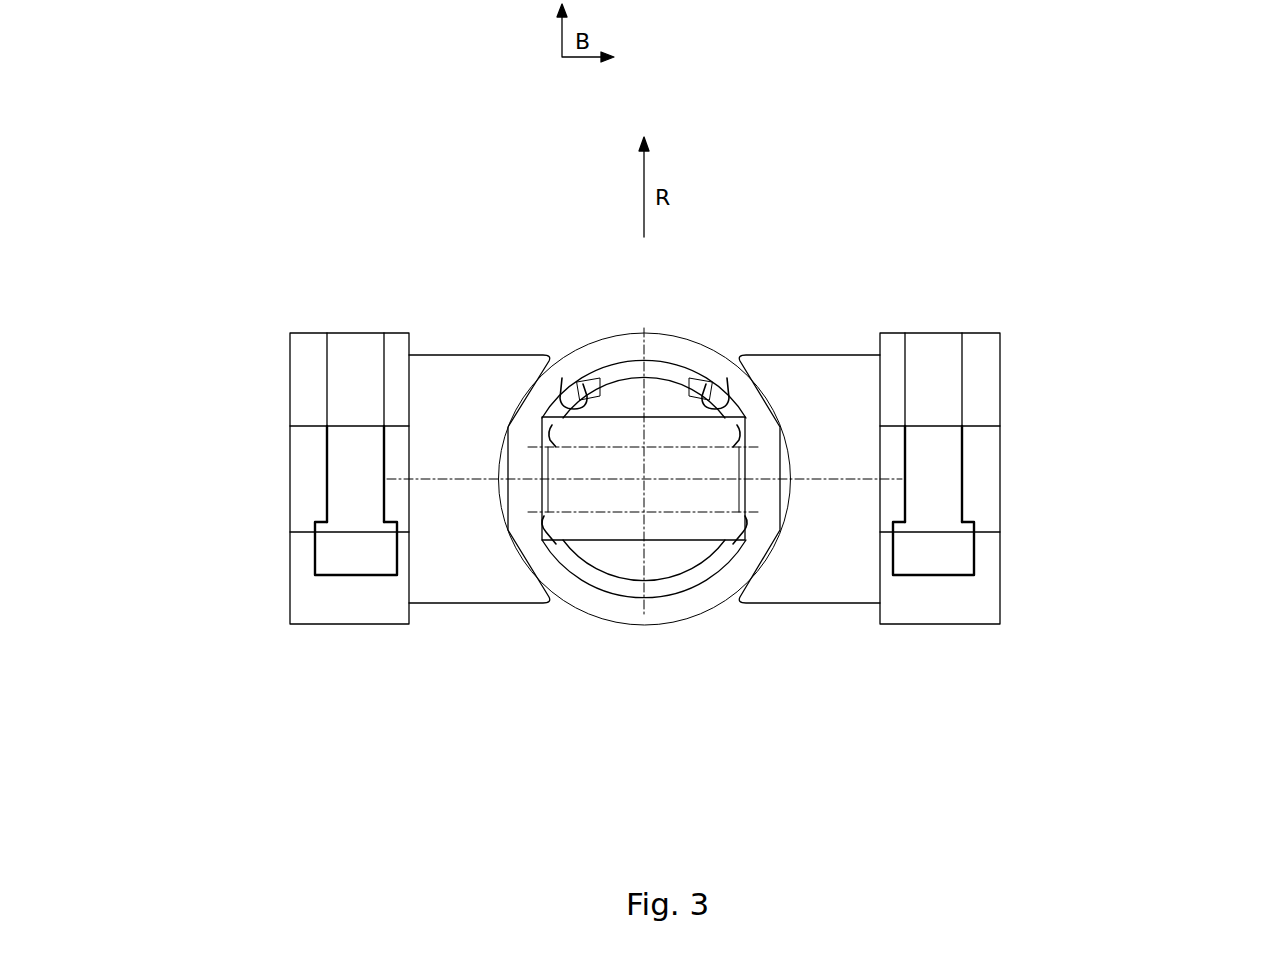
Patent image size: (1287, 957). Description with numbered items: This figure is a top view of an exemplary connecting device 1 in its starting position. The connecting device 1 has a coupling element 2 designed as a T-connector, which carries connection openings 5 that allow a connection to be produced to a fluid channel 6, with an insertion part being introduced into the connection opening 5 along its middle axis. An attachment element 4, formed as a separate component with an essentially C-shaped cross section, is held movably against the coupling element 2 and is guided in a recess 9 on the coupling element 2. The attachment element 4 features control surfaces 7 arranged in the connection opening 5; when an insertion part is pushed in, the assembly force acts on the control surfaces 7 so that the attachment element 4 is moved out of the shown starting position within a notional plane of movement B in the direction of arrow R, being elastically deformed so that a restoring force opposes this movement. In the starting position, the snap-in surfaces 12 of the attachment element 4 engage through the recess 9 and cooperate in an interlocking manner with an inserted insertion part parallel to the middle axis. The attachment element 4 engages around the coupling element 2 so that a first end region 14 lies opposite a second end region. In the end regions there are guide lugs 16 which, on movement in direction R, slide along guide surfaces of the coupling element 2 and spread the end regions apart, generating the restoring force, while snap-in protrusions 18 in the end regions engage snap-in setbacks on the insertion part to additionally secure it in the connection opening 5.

The connecting device 1 is at (886, 254).
The coupling element 2 is at (448, 390).
The attachment element 4 is at (340, 406).
The connection opening 5 is at (644, 482).
The fluid channel 6 is at (687, 497).
The control surface 7 is at (607, 366).
The recess 9 is at (327, 460).
The snap-in surface 12 is at (560, 385).
The first end region 14 is at (340, 542).
The guide lug 16 is at (390, 555).
The snap-in protrusion 18 is at (558, 547).